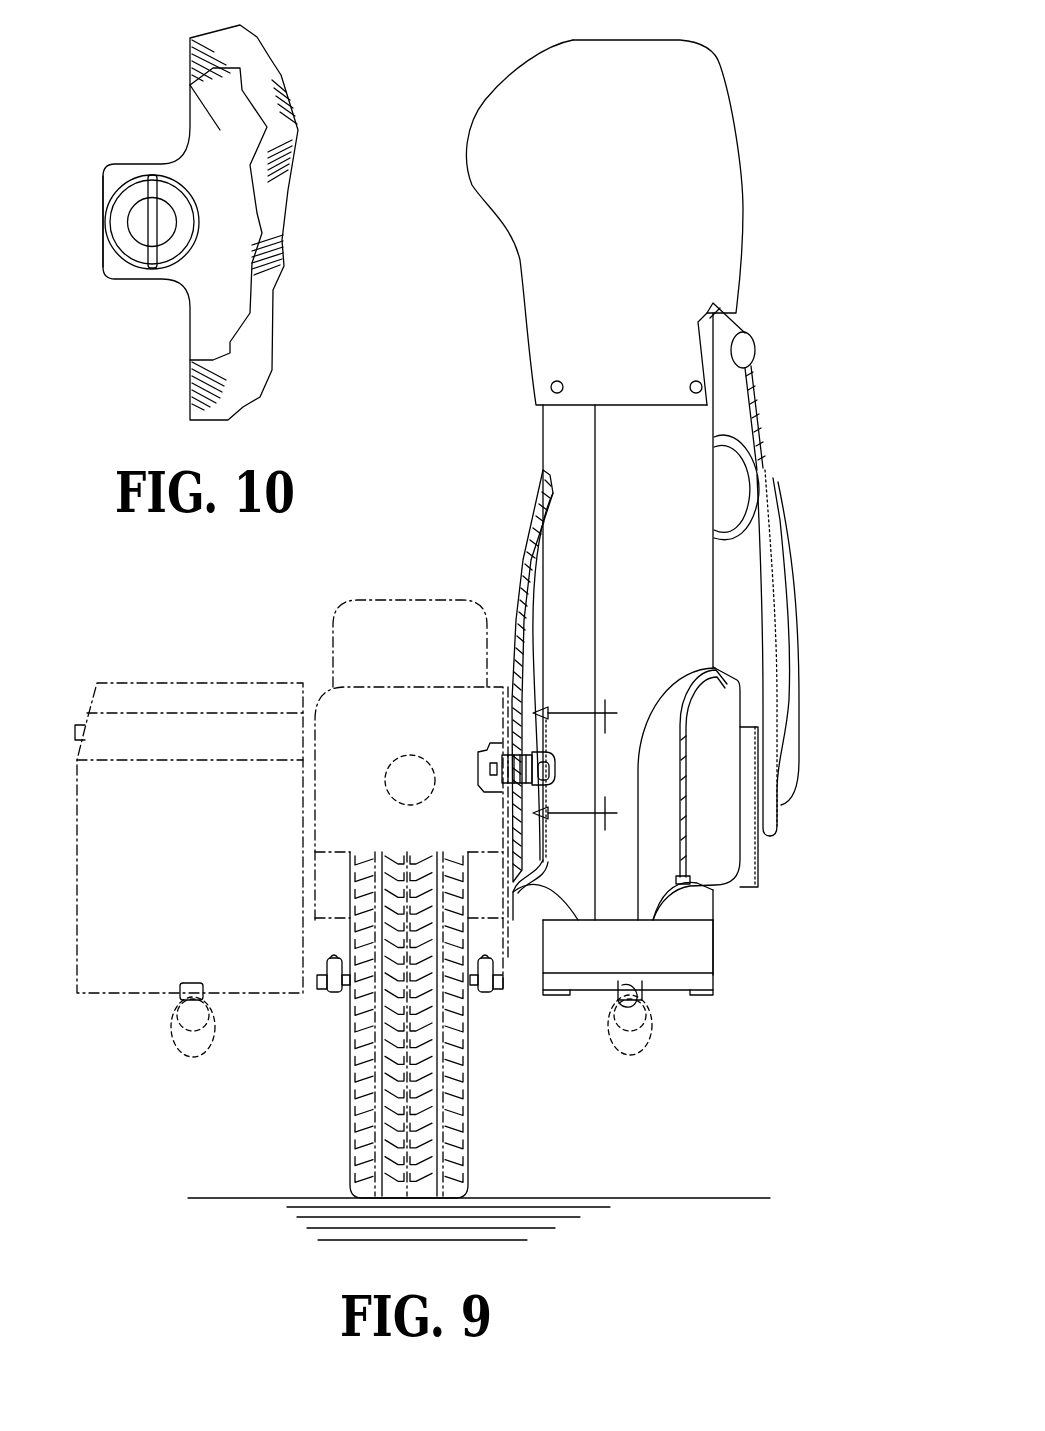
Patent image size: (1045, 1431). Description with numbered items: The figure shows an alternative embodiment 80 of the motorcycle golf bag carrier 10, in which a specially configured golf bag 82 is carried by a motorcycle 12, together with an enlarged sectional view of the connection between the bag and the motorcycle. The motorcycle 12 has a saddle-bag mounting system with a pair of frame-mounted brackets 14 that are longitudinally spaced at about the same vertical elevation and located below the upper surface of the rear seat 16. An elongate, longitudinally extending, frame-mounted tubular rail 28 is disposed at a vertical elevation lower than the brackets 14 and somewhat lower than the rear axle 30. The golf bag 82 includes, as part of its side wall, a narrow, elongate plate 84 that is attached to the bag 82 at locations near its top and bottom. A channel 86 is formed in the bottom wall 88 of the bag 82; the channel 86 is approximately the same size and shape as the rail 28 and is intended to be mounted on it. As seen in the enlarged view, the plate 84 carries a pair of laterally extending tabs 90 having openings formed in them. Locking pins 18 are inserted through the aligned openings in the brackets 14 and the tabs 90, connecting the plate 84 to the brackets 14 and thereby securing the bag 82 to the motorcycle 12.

In FIG. 9, the motorcycle golf bag carrier 10 is at (592, 765).
In FIG. 9, the motorcycle 12 is at (305, 626).
In FIG. 9, the frame-mounted brackets 14 is at (507, 733).
In FIG. 9, the rear seat 16 is at (380, 612).
In FIG. 10, the locking pin 18 is at (115, 308).
In FIG. 9, the locking pin 18 is at (557, 767).
In FIG. 9, the tubular rail 28 is at (641, 996).
In FIG. 9, the rear axle 30 is at (345, 992).
In FIG. 9, the alternative embodiment 80 is at (478, 412).
In FIG. 10, the golf bag 82 is at (257, 70).
In FIG. 9, the golf bag 82 is at (677, 483).
In FIG. 10, the elongate plate 84 is at (190, 85).
In FIG. 9, the elongate plate 84 is at (530, 522).
In FIG. 9, the channel 86 is at (622, 990).
In FIG. 9, the bottom wall 88 is at (706, 983).
In FIG. 10, the tabs 90 is at (120, 173).